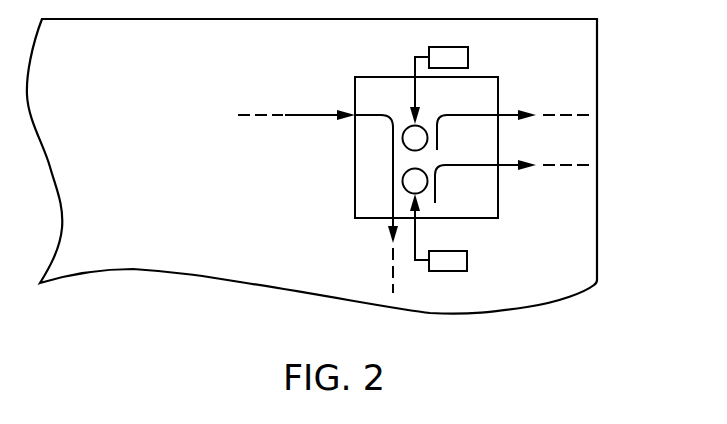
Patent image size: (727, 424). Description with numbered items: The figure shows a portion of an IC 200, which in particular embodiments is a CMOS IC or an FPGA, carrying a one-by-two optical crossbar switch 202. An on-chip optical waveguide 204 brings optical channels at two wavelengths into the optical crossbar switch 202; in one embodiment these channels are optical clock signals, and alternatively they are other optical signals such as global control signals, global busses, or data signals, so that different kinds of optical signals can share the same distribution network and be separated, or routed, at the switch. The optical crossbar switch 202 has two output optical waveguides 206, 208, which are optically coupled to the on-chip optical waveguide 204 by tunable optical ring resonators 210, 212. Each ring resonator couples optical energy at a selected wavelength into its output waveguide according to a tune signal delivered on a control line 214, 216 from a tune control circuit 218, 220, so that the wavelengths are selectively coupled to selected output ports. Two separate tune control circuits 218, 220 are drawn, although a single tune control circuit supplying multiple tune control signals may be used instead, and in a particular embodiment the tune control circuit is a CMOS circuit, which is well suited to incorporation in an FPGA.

The IC 200 is at (598, 52).
The 1×2 optical crossbar switch 202 is at (378, 77).
The on-chip optical waveguide 204 is at (309, 118).
The output optical waveguide 206 is at (512, 110).
The output optical waveguide 208 is at (505, 169).
The tunable optical ring resonator 210 is at (425, 121).
The tunable optical ring resonator 212 is at (418, 164).
The control line 214 is at (406, 72).
The control line 216 is at (422, 272).
The tune control circuit 218 is at (453, 47).
The tune control circuit 220 is at (450, 251).